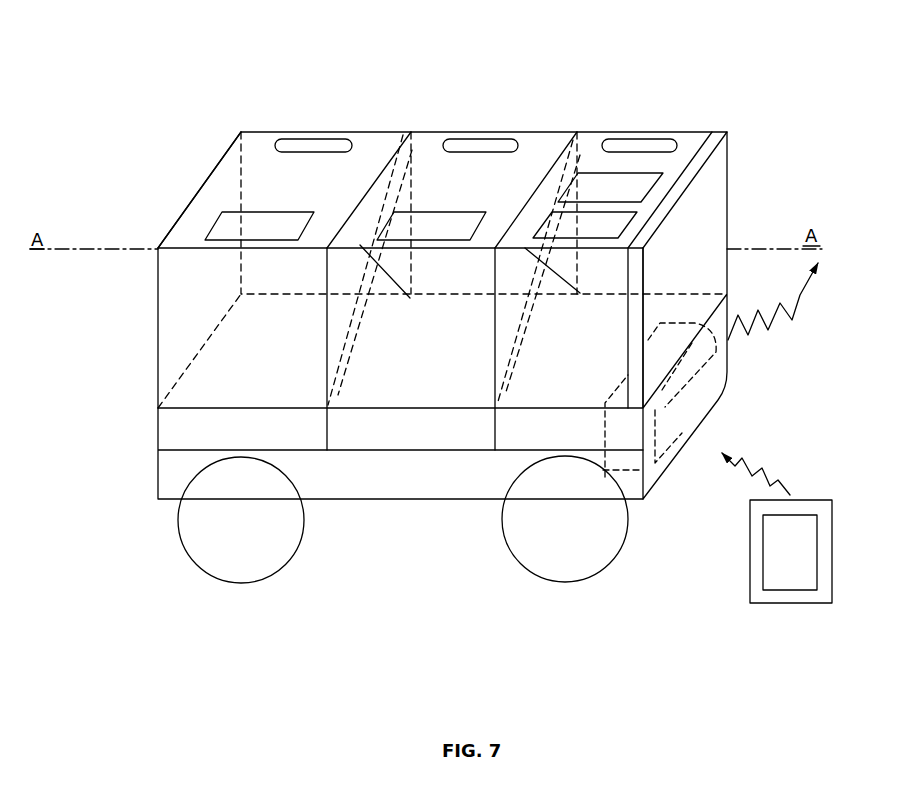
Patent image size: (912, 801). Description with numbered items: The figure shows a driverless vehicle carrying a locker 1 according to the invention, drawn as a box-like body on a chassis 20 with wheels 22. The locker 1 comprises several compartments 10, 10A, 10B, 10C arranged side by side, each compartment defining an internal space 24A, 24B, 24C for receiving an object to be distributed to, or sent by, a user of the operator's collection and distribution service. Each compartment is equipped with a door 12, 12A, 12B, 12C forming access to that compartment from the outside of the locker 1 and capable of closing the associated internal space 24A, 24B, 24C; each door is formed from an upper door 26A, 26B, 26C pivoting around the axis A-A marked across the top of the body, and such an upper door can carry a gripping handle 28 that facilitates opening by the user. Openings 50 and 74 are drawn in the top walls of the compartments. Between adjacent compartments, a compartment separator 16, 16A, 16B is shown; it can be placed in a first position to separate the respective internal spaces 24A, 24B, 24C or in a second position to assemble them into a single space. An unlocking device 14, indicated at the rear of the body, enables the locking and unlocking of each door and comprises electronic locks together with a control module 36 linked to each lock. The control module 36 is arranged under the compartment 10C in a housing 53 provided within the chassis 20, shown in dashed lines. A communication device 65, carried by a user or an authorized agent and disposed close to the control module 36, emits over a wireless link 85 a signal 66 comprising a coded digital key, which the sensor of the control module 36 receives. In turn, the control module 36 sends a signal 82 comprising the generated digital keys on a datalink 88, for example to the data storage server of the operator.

The locker 1 is at (115, 125).
The compartment 10 is at (213, 385).
The compartment 10A is at (200, 303).
The compartment 10B is at (413, 370).
The compartment 10C is at (702, 213).
The door 12 is at (608, 117).
The door 12A is at (233, 170).
The door 12B is at (430, 140).
The door 12C is at (700, 147).
The unlocking device 14 is at (742, 393).
The compartment separator 16 is at (345, 340).
The compartment separator 16A is at (327, 248).
The compartment separator 16B is at (495, 248).
The chassis 20 is at (178, 477).
The wheels 22 is at (233, 547).
The internal space 24A is at (301, 382).
The internal space 24B is at (469, 380).
The internal space 24C is at (608, 352).
The upper door 26A is at (258, 162).
The upper door 26B is at (528, 140).
The upper door 26C is at (677, 157).
The gripping handle 28 is at (637, 143).
The control module 36 is at (715, 408).
The opening 50 is at (421, 226).
The housing 53 is at (728, 362).
The communication device 65 is at (790, 570).
The signal 66 is at (737, 465).
The opening 74 is at (610, 187).
The signal 82 is at (797, 297).
The wireless link 85 is at (773, 470).
The datalink 88 is at (767, 308).